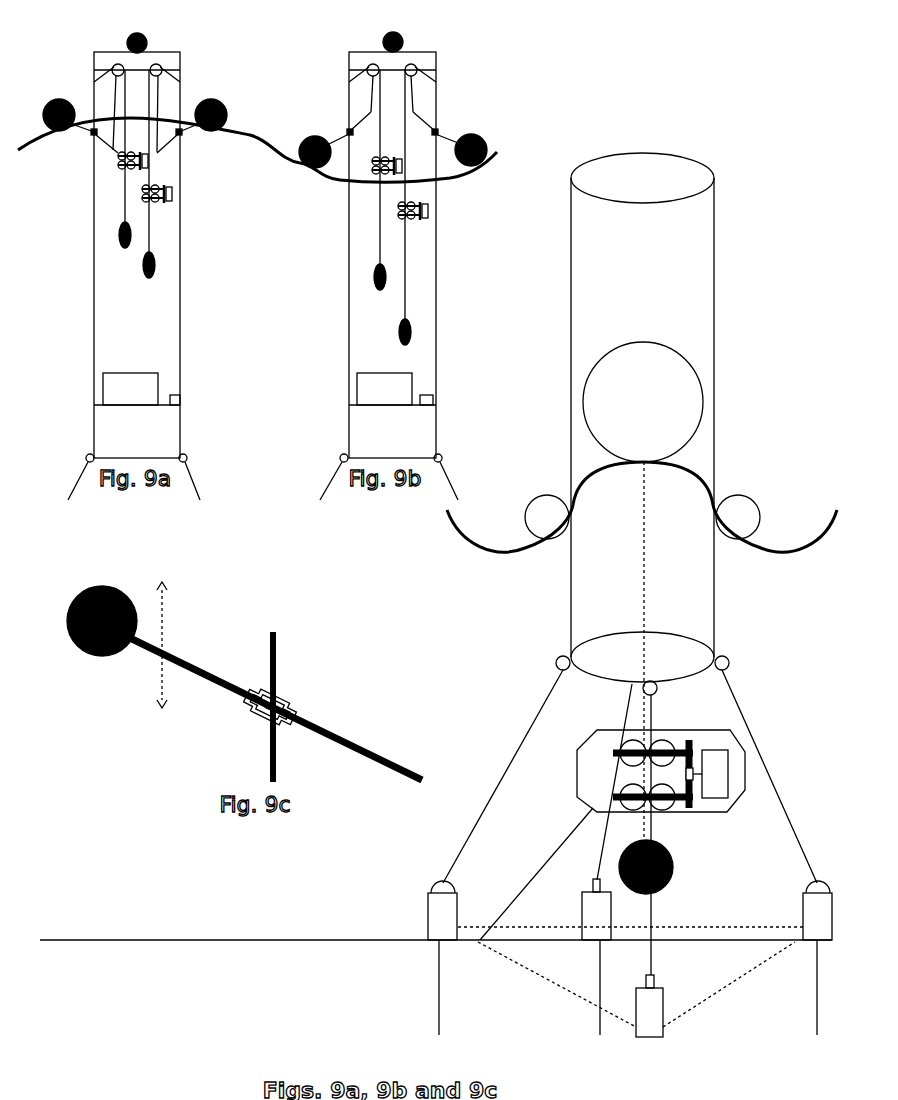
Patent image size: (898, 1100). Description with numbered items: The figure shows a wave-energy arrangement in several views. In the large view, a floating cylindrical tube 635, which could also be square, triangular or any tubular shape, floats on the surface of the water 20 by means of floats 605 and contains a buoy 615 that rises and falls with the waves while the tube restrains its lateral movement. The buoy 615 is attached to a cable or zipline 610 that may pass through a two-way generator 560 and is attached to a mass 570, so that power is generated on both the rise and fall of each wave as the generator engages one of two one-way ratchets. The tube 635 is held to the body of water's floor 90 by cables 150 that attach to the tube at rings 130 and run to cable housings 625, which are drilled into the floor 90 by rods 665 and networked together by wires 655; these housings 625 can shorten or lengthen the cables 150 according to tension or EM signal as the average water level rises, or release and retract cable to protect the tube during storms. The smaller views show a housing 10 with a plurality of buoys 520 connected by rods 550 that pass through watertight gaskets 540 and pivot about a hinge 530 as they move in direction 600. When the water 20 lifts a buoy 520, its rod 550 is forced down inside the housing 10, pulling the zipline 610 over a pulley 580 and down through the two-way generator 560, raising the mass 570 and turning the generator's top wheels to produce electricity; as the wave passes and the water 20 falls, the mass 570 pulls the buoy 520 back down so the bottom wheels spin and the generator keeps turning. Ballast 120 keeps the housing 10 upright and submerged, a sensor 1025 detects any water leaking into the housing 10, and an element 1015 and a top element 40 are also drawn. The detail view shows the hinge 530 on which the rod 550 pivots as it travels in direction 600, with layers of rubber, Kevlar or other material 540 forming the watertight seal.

In FIG. 9A, the housing 10 is at (93, 56).
In FIG. 9B, the housing 10 is at (392, 255).
In FIG. 9C, the housing 10 is at (268, 638).
In FIG. 9A, the water 20 is at (33, 143).
In FIG. 9B, the water 20 is at (398, 167).
In FIG. 9, the water 20 is at (498, 548).
In FIG. 9A, the top ball / beacon 40 is at (128, 38).
In FIG. 9B, the top ball / beacon 40 is at (393, 42).
In FIG. 9, the body of water's floor 90 is at (305, 940).
In FIG. 9A, the ballast 120 is at (165, 443).
In FIG. 9B, the ballast 120 is at (362, 422).
In FIG. 9, the rings 130 is at (557, 657).
In FIG. 9, the cables 150 is at (517, 747).
In FIG. 9A, the buoys 520 is at (66, 100).
In FIG. 9B, the buoys 520 is at (310, 137).
In FIG. 9C, the hinge 530 is at (258, 708).
In FIG. 9A, the watertight gaskets 540 is at (91, 135).
In FIG. 9B, the watertight gaskets 540 is at (348, 128).
In FIG. 9C, the watertight gaskets 540 is at (284, 694).
In FIG. 9A, the rods 550 is at (108, 152).
In FIG. 9B, the rods 550 is at (392, 103).
In FIG. 9C, the rods 550 is at (405, 778).
In FIG. 9A, the two-way generator 560 is at (118, 165).
In FIG. 9B, the two-way generator 560 is at (372, 178).
In FIG. 9, the two-way generator 560 is at (690, 812).
In FIG. 9A, the mass 570 is at (120, 248).
In FIG. 9B, the mass 570 is at (375, 295).
In FIG. 9, the mass 570 is at (618, 860).
In FIG. 9A, the pulley 580 is at (113, 66).
In FIG. 9B, the pulley 580 is at (392, 73).
In FIG. 9C, the direction 600 is at (157, 673).
In FIG. 9, the floats 605 is at (548, 495).
In FIG. 9A, the cable or zipline 610 is at (155, 255).
In FIG. 9B, the cable or zipline 610 is at (378, 140).
In FIG. 9, the cable or zipline 610 is at (643, 523).
In FIG. 9, the buoy 615 is at (696, 372).
In FIG. 9, the cable housings 625 is at (592, 903).
In FIG. 9, the floating cylindrical tube 635 is at (716, 228).
In FIG. 9, the wires 655 is at (507, 958).
In FIG. 9, the rods 665 is at (817, 960).
In FIG. 9A, the electronics box 1015 is at (105, 380).
In FIG. 9B, the electronics box 1015 is at (360, 385).
In FIG. 9A, the sensor 1025 is at (180, 397).
In FIG. 9B, the sensor 1025 is at (432, 397).